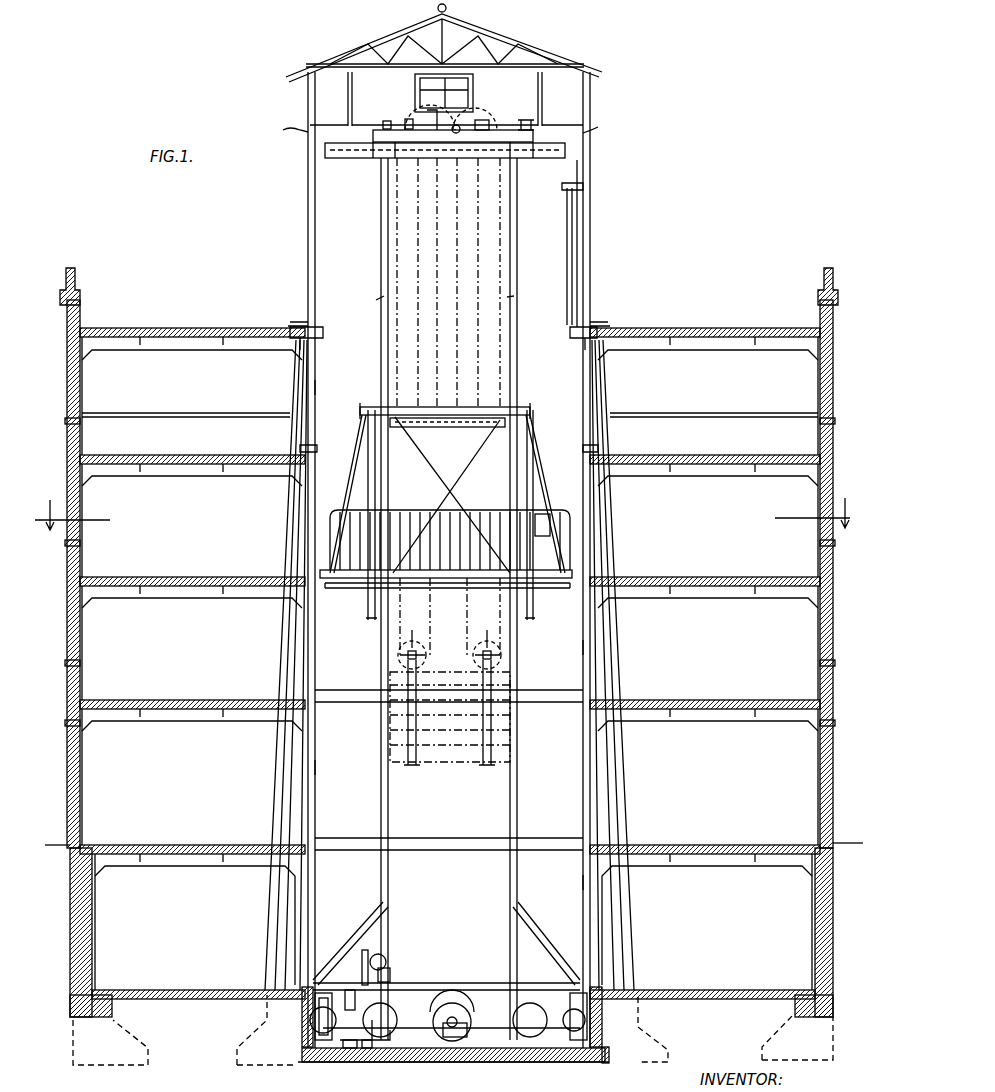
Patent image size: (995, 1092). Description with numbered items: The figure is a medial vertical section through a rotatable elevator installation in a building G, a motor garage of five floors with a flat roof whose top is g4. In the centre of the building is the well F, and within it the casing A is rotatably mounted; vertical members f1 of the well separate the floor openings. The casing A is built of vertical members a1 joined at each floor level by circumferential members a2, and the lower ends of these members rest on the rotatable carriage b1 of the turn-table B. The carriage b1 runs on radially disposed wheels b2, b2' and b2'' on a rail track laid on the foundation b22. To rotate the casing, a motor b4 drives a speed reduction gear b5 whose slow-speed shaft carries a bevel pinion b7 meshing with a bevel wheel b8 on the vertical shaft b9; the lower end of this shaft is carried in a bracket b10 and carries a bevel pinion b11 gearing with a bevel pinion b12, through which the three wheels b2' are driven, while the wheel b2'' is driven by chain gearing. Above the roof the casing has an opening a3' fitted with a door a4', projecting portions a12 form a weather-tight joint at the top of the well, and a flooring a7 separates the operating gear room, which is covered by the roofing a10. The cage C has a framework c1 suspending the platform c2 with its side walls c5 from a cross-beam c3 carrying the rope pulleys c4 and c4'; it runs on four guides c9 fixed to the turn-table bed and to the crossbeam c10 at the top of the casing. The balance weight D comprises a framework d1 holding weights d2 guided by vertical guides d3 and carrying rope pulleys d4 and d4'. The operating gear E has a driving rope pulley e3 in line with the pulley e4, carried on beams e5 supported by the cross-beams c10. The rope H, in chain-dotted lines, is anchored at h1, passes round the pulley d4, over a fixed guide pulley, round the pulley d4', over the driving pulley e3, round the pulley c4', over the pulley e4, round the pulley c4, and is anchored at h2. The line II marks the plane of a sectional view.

The roofing a10 is at (550, 46).
The rope pulley e4 is at (447, 112).
The cage operating gear E is at (486, 108).
The driving rope pulley e3 is at (489, 124).
The beams e5 is at (528, 126).
The anchoring point h2 is at (408, 118).
The anchoring point h1 is at (388, 128).
The crossbeam c10 is at (343, 154).
The casing A is at (590, 158).
The flooring a7 is at (439, 122).
The door a4' is at (593, 254).
The opening a3' is at (601, 243).
The projecting portions a12 is at (300, 322).
The rope H is at (463, 233).
The cage guides c9 is at (380, 250).
The balance weight guides d3 is at (380, 298).
The circumferential members a2 is at (308, 448).
The vertical members a1 is at (313, 386).
The elevator cage C is at (485, 508).
The cross-beam c3 is at (530, 411).
The rope pulley c4' is at (447, 445).
The rope pulley c4 is at (450, 515).
The cage framework c1 is at (370, 478).
The side walls c5 is at (450, 529).
The platform c2 is at (560, 566).
The balance weight D is at (449, 709).
The rope pulley d4 is at (430, 649).
The rope pulley d4' is at (521, 643).
The weights d2 is at (400, 738).
The balance weight framework d1 is at (485, 760).
The building G is at (454, 666).
The roof top g4 is at (213, 325).
The vertical members of the well f1 is at (296, 380).
The section line II is at (442, 504).
The turn-table B is at (455, 995).
The well F is at (418, 1062).
The rotatable carriage b1 is at (330, 980).
The motor b4 is at (383, 958).
The bevel pinion b7 is at (371, 953).
The speed reduction gear b5 is at (392, 975).
The bracket b10 is at (384, 1025).
The bevel wheel b8 is at (363, 1004).
The vertical shaft b9 is at (315, 1004).
The driven wheel b2'' is at (389, 1015).
The wheels b2 is at (450, 1041).
The driven wheels b2' is at (597, 1016).
The foundation b22 is at (609, 1057).
The bevel pinion b11 is at (350, 1048).
The bevel pinion b12 is at (367, 1048).